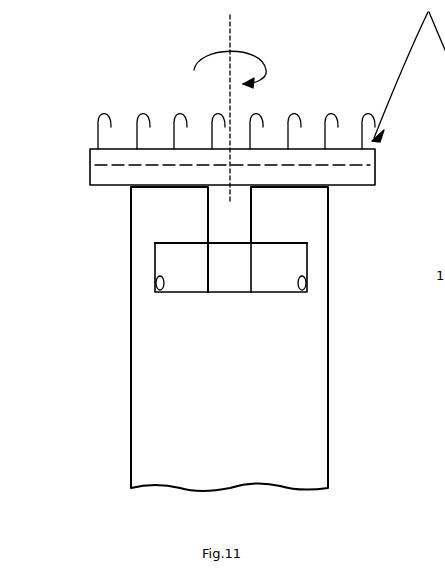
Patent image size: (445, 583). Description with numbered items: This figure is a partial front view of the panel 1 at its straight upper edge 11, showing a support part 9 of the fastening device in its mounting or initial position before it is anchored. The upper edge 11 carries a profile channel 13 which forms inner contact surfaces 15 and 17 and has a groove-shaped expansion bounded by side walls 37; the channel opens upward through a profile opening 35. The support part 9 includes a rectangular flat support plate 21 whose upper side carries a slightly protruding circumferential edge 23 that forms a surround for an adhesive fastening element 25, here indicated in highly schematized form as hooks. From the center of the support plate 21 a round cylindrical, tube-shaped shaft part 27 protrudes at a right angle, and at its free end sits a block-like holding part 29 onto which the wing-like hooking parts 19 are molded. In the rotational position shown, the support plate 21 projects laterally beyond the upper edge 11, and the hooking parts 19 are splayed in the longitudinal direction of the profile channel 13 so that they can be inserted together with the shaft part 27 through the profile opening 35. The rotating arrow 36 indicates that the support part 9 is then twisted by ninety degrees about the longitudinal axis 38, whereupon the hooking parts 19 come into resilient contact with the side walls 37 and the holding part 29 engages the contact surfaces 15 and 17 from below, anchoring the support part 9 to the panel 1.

The panel 1 is at (283, 393).
The support part 9 is at (408, 71).
The upper edge 11 is at (330, 215).
The profile channel 13 is at (162, 263).
The inner contact surface 15 is at (155, 243).
The inner contact surface 17 is at (277, 243).
The hooking part 19 is at (213, 292).
The support plate 21 is at (363, 181).
The circumferential edge 23 is at (378, 150).
The adhesive fastening element 25 is at (308, 148).
The shaft part 27 is at (216, 216).
The holding part 29 is at (228, 278).
The profile opening 35 is at (244, 224).
The rotating arrow 36 is at (244, 50).
The side wall 37 is at (153, 286).
The longitudinal axis 38 is at (216, 25).